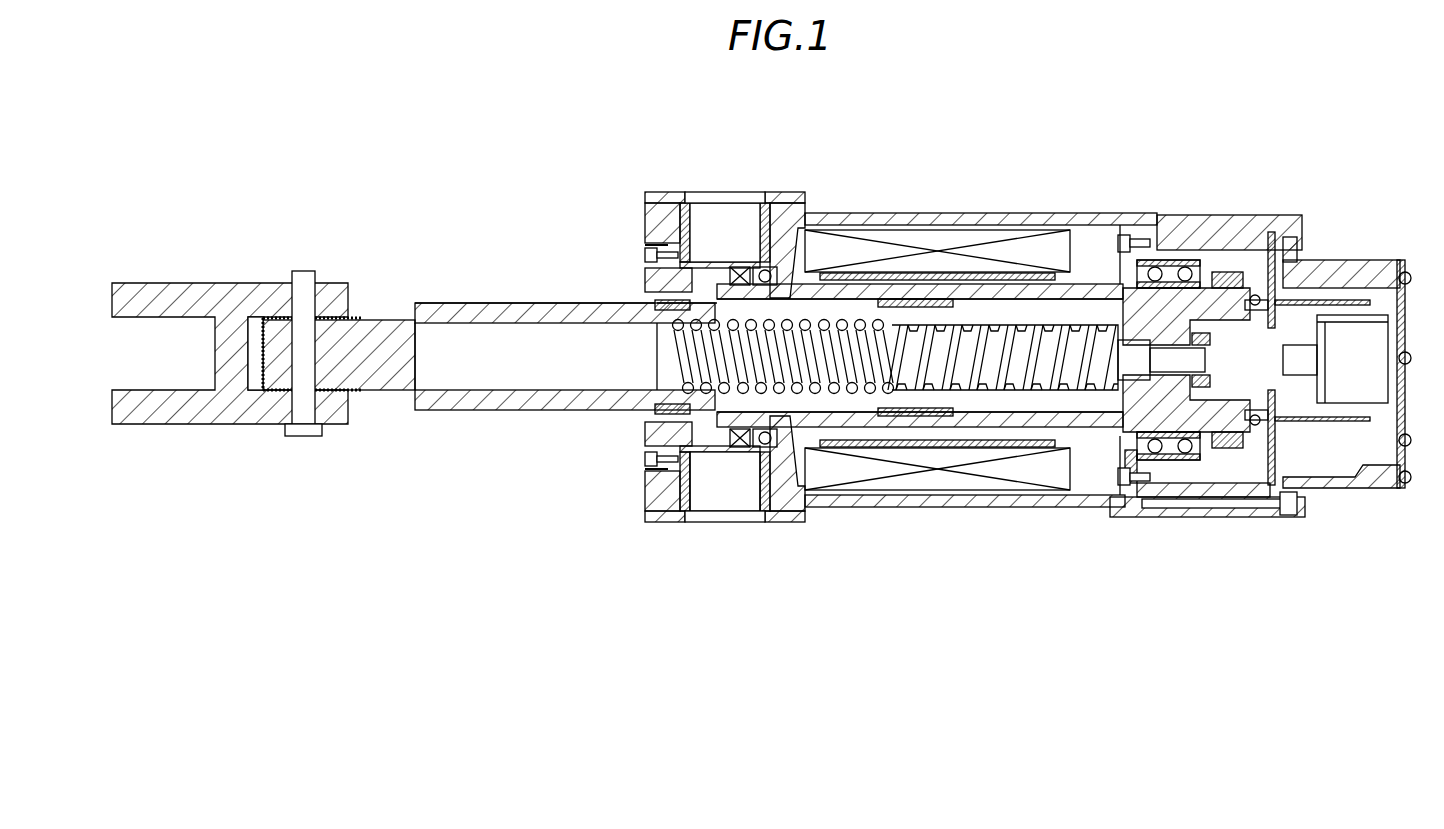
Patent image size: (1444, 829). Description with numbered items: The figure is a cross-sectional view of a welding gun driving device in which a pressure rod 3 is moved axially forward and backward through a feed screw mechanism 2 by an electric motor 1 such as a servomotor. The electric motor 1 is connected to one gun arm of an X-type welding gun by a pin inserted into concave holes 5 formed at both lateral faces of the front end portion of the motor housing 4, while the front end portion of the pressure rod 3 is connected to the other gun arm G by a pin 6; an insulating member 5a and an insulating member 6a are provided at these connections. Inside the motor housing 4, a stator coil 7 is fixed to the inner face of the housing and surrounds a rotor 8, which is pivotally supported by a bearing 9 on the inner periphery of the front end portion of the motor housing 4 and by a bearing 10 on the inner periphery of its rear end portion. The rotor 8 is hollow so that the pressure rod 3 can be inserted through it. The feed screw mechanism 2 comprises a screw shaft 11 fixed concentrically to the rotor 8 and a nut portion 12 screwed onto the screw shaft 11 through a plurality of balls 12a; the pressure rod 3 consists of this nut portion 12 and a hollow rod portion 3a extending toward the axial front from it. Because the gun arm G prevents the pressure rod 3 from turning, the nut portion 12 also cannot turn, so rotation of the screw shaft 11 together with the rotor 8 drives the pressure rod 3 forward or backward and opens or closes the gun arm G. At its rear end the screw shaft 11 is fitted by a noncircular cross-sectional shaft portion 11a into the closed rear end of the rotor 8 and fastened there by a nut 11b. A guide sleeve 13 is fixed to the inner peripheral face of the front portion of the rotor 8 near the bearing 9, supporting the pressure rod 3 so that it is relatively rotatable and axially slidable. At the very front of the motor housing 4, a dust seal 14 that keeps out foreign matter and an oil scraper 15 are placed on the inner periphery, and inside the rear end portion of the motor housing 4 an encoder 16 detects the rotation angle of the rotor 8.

The gun arm G is at (230, 284).
The electric motor 1 is at (1041, 203).
The feed screw mechanism 2 is at (952, 400).
The pressure rod 3 is at (528, 298).
The hollow rod portion 3a is at (600, 304).
The motor housing 4 is at (1073, 213).
The concave holes 5 is at (758, 222).
The insulating member 5a is at (702, 512).
The pin 6 is at (303, 271).
The insulating member 6a is at (350, 318).
The stator coil 7 is at (955, 236).
The rotor 8 is at (1092, 280).
The bearing 9 is at (780, 226).
The bearing 10 is at (1186, 266).
The screw shaft 11 is at (1078, 393).
The noncircular cross-sectional shaft portion 11a is at (1208, 343).
The nut 11b is at (1208, 378).
The nut portion 12 is at (872, 400).
The balls 12a is at (838, 400).
The guide sleeve 13 is at (945, 306).
The dust seal 14 is at (652, 412).
The oil scraper 15 is at (650, 422).
The encoder 16 is at (1388, 326).